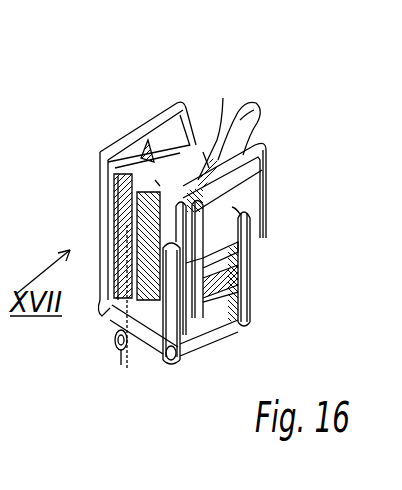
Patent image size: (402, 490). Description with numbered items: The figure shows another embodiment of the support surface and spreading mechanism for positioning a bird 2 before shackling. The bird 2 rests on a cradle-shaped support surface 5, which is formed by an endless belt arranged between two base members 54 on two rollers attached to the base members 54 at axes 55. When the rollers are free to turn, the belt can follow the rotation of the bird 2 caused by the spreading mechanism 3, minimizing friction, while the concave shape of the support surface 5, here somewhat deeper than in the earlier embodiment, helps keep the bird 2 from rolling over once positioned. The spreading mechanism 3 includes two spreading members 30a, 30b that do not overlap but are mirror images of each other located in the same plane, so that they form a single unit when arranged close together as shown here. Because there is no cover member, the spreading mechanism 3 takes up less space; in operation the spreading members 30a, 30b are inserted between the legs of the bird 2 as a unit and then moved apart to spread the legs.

The bird 2 is at (202, 142).
The spreading mechanism 3 is at (147, 350).
The support surface 5 is at (232, 207).
The base member 54 is at (108, 200).
The axis 55 is at (103, 165).
The spreading member 30a is at (110, 296).
The spreading member 30b is at (182, 302).